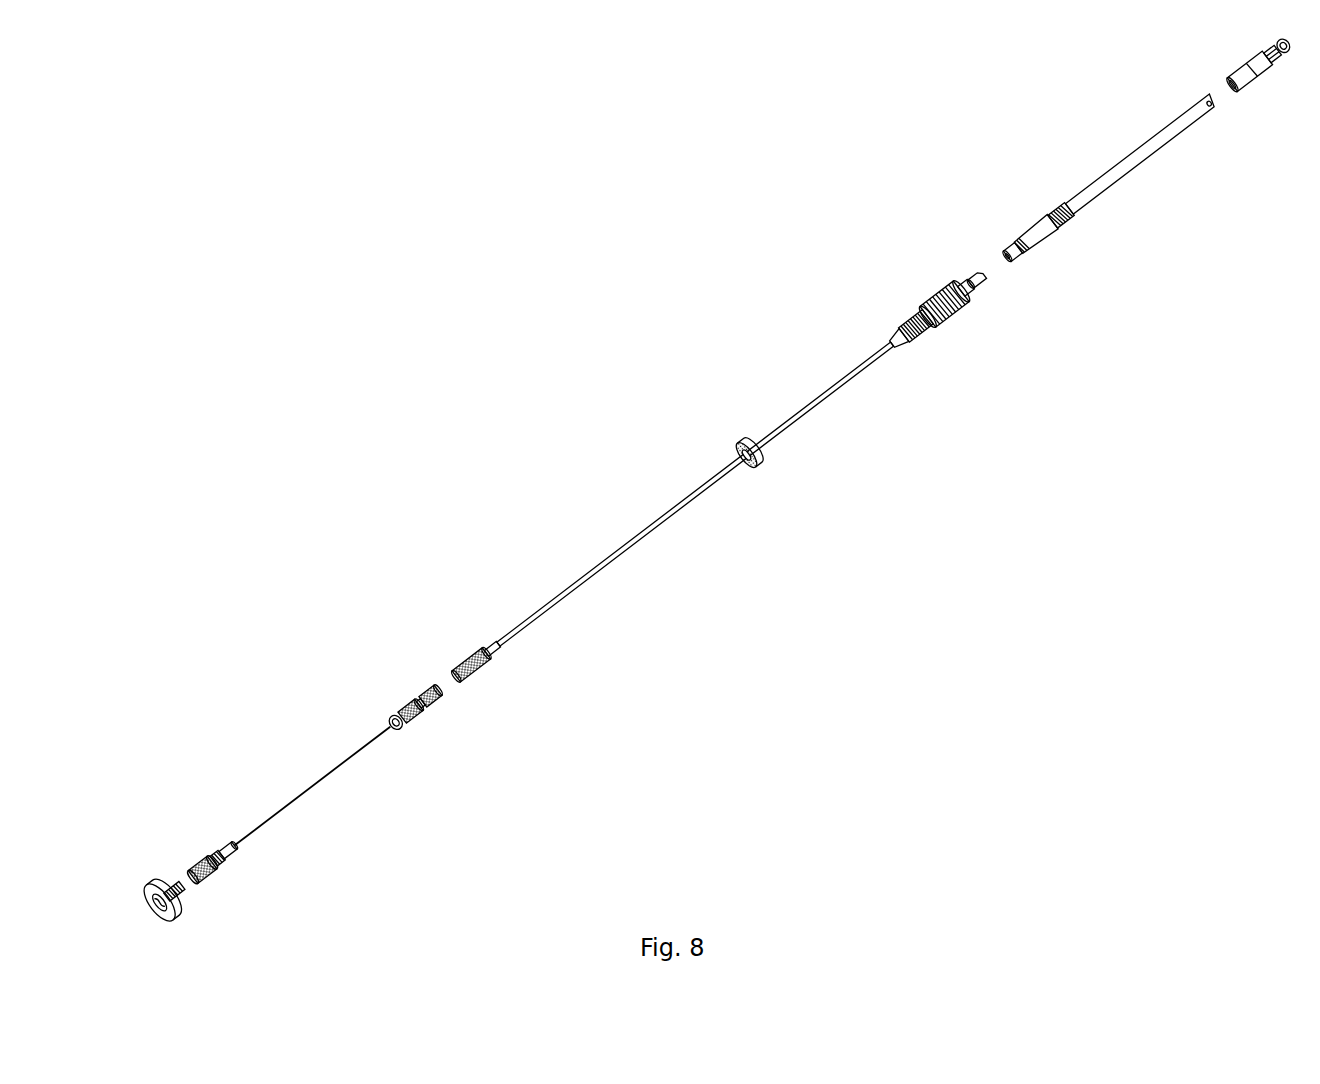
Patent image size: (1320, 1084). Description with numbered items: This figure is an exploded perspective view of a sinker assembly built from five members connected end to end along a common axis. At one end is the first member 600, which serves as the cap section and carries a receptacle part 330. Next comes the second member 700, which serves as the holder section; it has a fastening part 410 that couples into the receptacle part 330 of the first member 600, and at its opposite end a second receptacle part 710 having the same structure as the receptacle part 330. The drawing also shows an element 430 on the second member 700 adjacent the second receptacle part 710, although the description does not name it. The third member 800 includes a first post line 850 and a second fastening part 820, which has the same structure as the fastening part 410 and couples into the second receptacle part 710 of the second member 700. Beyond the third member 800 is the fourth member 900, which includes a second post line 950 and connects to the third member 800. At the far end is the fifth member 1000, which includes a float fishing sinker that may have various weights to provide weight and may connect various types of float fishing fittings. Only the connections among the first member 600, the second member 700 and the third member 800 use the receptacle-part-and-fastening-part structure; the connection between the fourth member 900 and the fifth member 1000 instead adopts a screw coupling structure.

The receptacle part 330 is at (1257, 80).
The fastening part 410 is at (1193, 117).
The spring 430 is at (1057, 227).
The first member 600 is at (1214, 110).
The second member 700 is at (1108, 206).
The second receptacle part 710 is at (1017, 257).
The third member 800 is at (720, 458).
The second fastening part 820 is at (970, 282).
The first post line 850 is at (720, 477).
The fourth member 900 is at (339, 751).
The second post line 950 is at (313, 738).
The fifth member 1000 is at (172, 870).